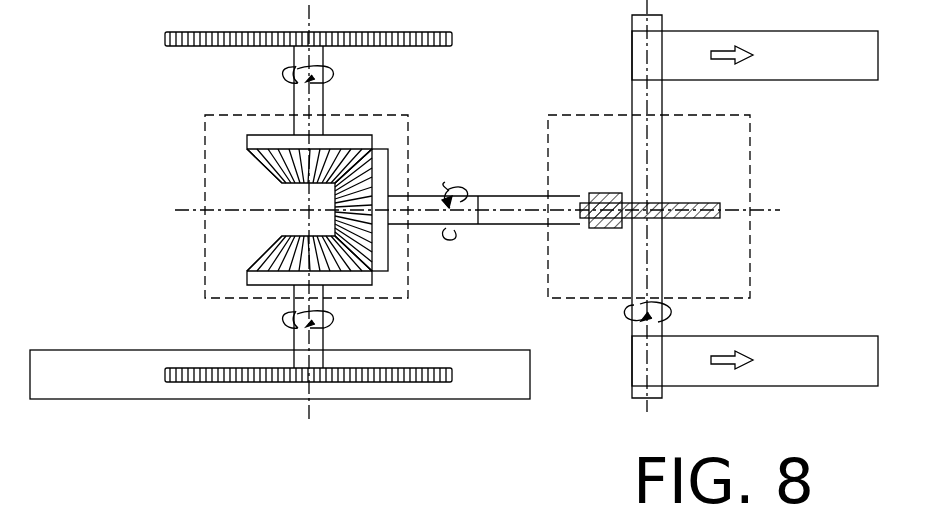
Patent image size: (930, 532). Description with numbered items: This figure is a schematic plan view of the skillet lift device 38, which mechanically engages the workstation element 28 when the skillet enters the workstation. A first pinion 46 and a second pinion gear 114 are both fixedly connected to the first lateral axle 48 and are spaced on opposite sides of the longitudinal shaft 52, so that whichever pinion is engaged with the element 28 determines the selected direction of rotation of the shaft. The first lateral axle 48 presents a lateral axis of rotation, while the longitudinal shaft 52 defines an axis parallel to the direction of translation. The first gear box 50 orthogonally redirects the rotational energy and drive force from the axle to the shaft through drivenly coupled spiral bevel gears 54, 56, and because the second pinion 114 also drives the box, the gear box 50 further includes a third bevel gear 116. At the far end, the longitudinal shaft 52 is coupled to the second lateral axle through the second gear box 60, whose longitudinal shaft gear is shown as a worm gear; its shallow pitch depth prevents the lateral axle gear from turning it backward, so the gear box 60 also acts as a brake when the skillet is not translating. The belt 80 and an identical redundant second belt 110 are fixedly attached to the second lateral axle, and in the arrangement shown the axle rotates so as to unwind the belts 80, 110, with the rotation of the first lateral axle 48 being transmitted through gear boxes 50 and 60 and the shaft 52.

The device 38 is at (110, 106).
The gear box 50 is at (205, 153).
The spiral bevel gear 54 is at (265, 248).
The pinion 46 is at (228, 368).
The element 28 is at (78, 350).
The second pinion gear 114 is at (398, 46).
The third bevel gear 116 is at (340, 135).
The spiral bevel gear 56 is at (387, 153).
The longitudinal shaft 52 is at (518, 226).
The first lateral axle 48 is at (325, 337).
The second belt 110 is at (838, 80).
The second gear box 60 is at (752, 196).
The belt 80 is at (825, 336).